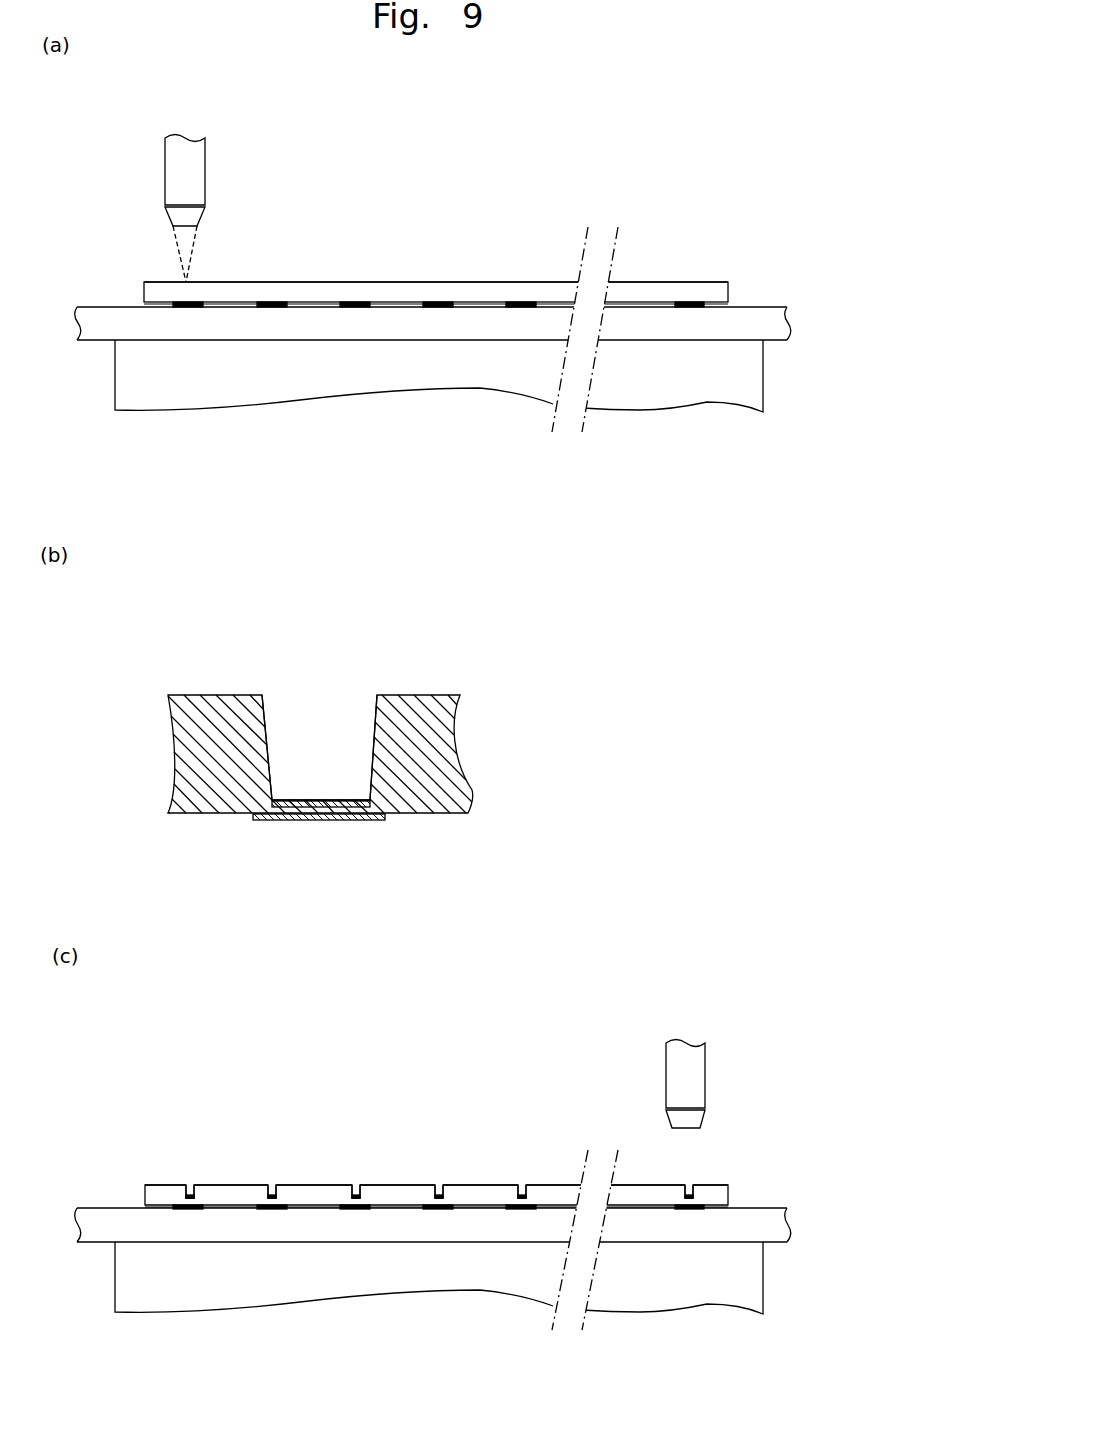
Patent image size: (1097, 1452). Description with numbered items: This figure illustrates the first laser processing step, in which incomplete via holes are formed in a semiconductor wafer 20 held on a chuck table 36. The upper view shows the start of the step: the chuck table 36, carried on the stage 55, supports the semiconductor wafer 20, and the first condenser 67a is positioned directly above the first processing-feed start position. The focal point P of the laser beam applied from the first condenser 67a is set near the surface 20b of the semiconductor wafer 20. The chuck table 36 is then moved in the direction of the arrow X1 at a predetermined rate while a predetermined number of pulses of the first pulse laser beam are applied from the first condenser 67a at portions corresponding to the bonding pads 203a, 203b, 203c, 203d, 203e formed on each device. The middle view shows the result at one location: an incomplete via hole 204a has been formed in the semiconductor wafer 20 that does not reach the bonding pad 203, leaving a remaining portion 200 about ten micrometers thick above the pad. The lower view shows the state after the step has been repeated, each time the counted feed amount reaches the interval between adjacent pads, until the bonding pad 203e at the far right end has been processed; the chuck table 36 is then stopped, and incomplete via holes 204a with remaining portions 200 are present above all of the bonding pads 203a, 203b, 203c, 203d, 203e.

The first condenser 67a is at (205, 165).
The focal point P is at (186, 282).
The semiconductor wafer 20 is at (560, 240).
The upper surface of substrate 20b is at (393, 282).
The bonding pad 203a is at (193, 302).
The bonding pad 203b is at (270, 302).
The bonding pad 203c is at (352, 302).
The bonding pad 203d is at (437, 302).
The bonding pad 203e is at (518, 302).
The bonding pad 203 is at (340, 822).
The incomplete via hole 204a is at (305, 708).
The remaining portion 200 is at (297, 810).
The stage 55 is at (762, 318).
The chuck table 36 is at (752, 382).
The processing-feed direction arrow X1 is at (392, 464).